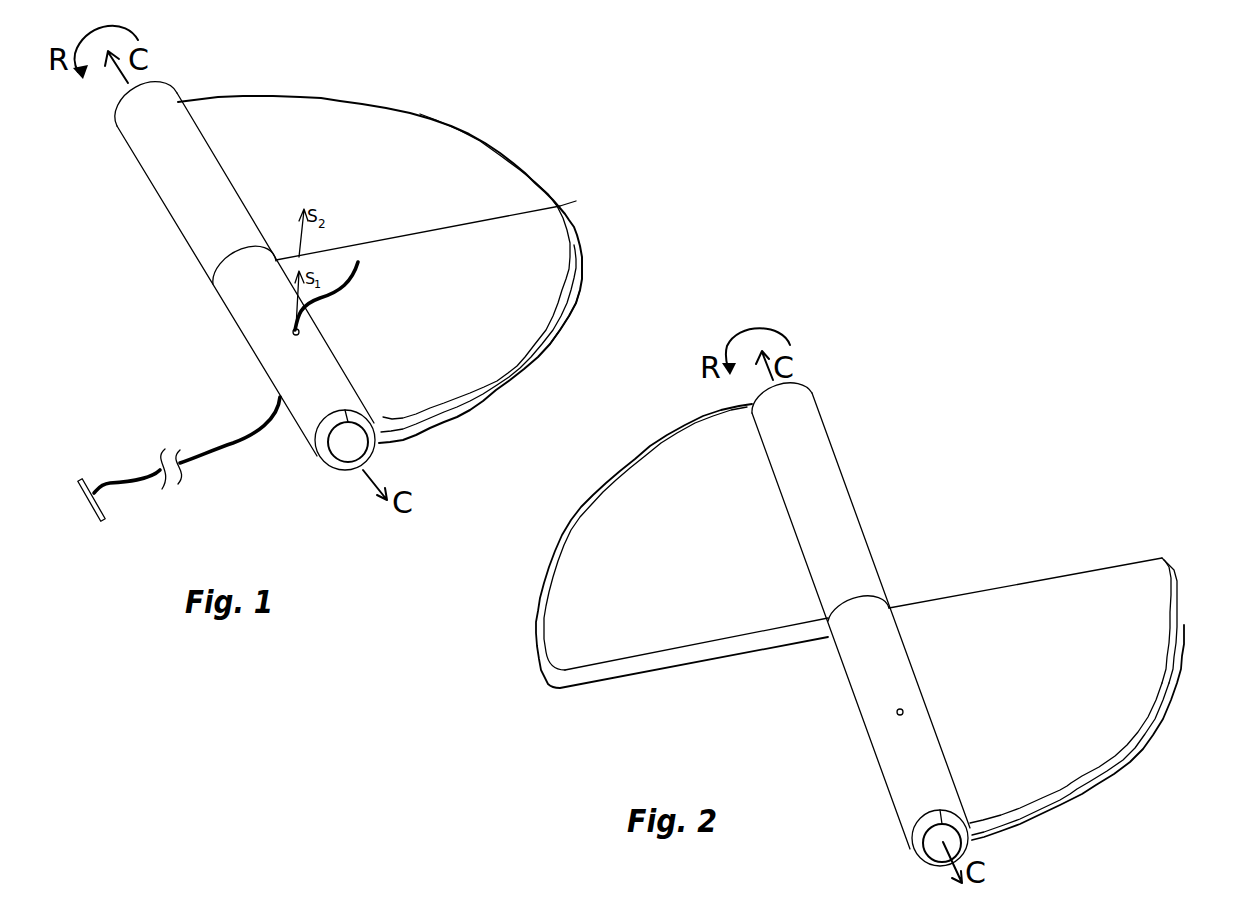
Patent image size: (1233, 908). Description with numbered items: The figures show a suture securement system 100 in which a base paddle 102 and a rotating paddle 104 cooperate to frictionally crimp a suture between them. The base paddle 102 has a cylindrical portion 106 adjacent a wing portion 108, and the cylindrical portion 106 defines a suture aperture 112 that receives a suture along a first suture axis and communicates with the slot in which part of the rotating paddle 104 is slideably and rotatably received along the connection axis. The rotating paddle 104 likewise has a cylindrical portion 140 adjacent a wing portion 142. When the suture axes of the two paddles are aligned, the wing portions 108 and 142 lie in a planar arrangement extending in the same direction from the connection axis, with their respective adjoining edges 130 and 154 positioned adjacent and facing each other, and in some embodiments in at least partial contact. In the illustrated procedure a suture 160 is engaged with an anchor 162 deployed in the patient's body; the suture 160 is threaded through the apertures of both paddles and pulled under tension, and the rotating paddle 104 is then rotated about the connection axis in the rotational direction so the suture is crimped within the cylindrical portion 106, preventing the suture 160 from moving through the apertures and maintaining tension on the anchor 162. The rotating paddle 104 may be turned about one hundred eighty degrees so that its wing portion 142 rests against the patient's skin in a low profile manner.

In FIG. 1, the suture securement system 100 is at (585, 82).
In FIG. 2, the suture securement system 100 is at (1075, 388).
In FIG. 1, the base paddle 102 is at (564, 330).
In FIG. 2, the base paddle 102 is at (1184, 626).
In FIG. 1, the rotating paddle 104 is at (410, 113).
In FIG. 2, the rotating paddle 104 is at (547, 573).
In FIG. 1, the cylindrical portion 106 is at (235, 318).
In FIG. 2, the cylindrical portion 106 is at (886, 783).
In FIG. 1, the wing portion 108 is at (582, 258).
In FIG. 2, the wing portion 108 is at (1122, 764).
In FIG. 1, the suture aperture 112 is at (293, 333).
In FIG. 2, the suture aperture 112 is at (897, 710).
In FIG. 1, the adjoining edge 130 is at (560, 206).
In FIG. 2, the adjoining edge 130 is at (1040, 579).
In FIG. 1, the cylindrical portion 140 is at (146, 170).
In FIG. 2, the cylindrical portion 140 is at (849, 500).
In FIG. 1, the wing portion 142 is at (267, 96).
In FIG. 2, the wing portion 142 is at (634, 454).
In FIG. 1, the adjoining edge 154 is at (576, 201).
In FIG. 2, the adjoining edge 154 is at (673, 653).
In FIG. 1, the suture 160 is at (210, 452).
In FIG. 1, the anchor 162 is at (90, 497).